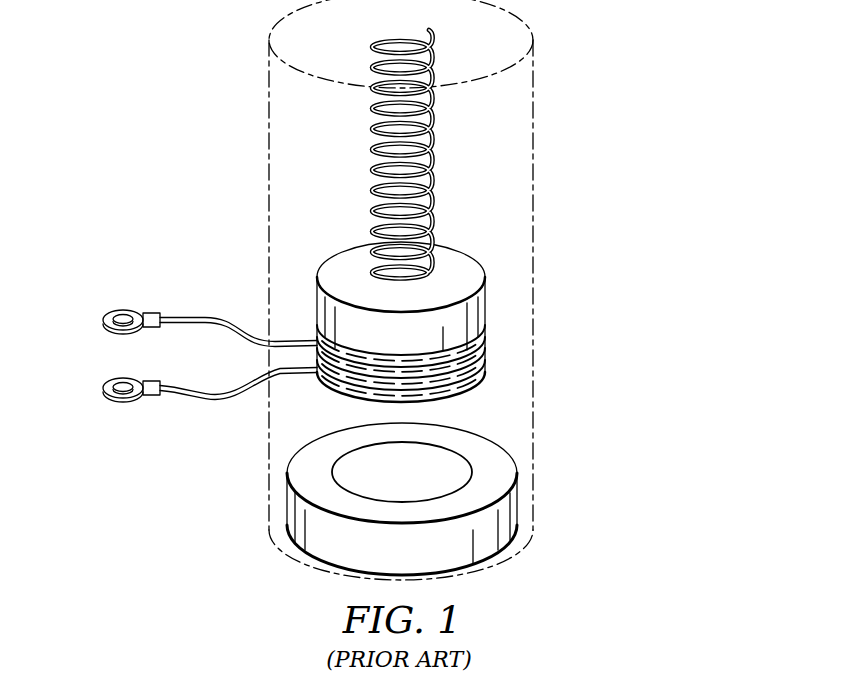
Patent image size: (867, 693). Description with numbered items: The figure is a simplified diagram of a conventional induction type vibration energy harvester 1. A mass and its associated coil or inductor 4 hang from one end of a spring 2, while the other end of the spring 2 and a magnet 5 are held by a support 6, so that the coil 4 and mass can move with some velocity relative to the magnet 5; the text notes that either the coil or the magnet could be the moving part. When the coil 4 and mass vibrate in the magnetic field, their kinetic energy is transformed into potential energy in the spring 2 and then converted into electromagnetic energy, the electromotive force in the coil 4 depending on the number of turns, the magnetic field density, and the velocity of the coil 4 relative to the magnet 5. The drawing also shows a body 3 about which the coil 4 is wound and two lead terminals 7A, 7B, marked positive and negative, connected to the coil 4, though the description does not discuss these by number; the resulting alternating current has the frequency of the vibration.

The induction type vibration energy harvester 1 is at (103, 160).
The spring 2 is at (372, 172).
The core / bobbin 3 is at (458, 263).
The coil 4 is at (485, 349).
The magnet 5 is at (485, 453).
The support 6 is at (268, 65).
The positive terminal 7A is at (102, 319).
The negative terminal 7B is at (102, 386).